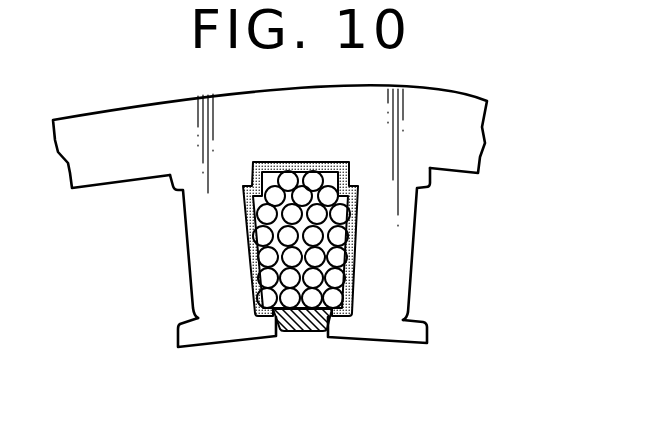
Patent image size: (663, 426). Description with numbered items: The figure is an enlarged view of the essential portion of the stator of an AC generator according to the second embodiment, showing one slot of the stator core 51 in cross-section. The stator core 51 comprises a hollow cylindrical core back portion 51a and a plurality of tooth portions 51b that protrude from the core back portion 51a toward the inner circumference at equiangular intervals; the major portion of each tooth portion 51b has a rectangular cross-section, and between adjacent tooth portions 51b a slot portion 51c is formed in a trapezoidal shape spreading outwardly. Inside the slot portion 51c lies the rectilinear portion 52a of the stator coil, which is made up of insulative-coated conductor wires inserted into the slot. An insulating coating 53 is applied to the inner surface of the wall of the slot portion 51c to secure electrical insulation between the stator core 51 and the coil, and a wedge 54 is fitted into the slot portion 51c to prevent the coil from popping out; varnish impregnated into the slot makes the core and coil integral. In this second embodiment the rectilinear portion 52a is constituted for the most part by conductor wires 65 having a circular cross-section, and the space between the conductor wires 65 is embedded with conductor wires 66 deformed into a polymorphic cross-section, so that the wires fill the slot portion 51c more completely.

The stator core 51 is at (315, 216).
The core back portion 51a is at (452, 163).
The tooth portion 51b is at (390, 253).
The slot portion 51c is at (347, 311).
The rectilinear portion 52a is at (113, 192).
The insulating coating 53 is at (258, 290).
The wedge 54 is at (303, 322).
The conductor wires having circular cross-section 65 is at (268, 259).
The conductor wires deformed into polymorphic cross-section 66 is at (260, 198).